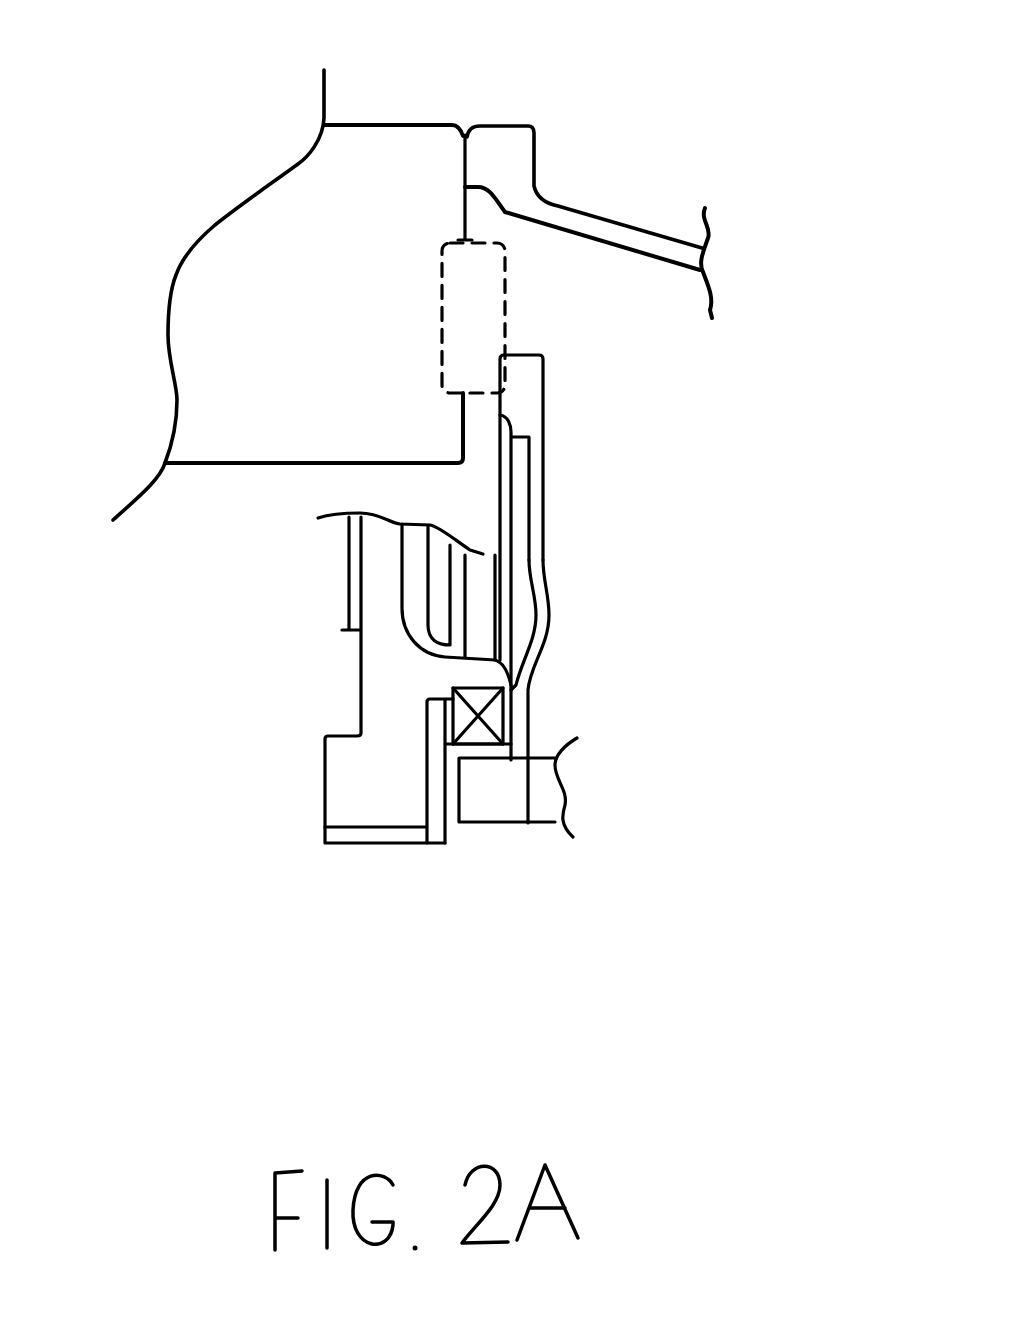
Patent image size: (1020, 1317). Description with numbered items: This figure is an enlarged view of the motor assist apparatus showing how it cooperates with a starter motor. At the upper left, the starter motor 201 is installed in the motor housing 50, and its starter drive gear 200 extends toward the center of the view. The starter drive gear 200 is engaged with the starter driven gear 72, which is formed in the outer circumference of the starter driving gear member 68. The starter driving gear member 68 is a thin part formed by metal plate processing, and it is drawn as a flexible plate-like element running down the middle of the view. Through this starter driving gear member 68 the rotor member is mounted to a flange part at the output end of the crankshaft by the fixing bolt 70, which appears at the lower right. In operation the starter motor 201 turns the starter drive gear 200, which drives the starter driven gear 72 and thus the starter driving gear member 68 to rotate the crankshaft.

The starter drive gear 200 is at (458, 337).
The starter motor 201 is at (457, 22).
The motor housing 50 is at (680, 88).
The starter driven gear 72 is at (522, 392).
The starter driving gear member 68 is at (738, 615).
The fixing bolt 70 is at (546, 935).